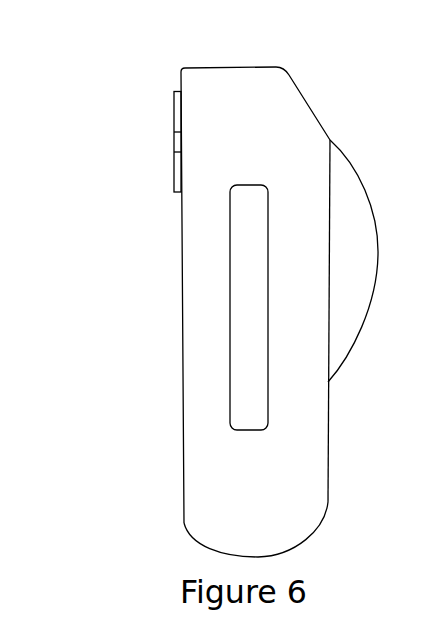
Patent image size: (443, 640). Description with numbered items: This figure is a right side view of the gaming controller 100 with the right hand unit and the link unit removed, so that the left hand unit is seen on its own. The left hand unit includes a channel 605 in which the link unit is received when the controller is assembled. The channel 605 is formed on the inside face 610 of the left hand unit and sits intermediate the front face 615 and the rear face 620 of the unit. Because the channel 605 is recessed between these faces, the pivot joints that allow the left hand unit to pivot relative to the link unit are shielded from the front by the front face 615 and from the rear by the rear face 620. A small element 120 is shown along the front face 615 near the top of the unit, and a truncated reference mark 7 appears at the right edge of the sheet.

The electronic device 100 is at (234, 285).
The button 120 is at (173, 157).
The channel 605 is at (229, 307).
The inside face 610 is at (273, 478).
The front face 615 is at (183, 391).
The rear face 620 is at (329, 429).
The partial reference numeral 7 is at (436, 178).